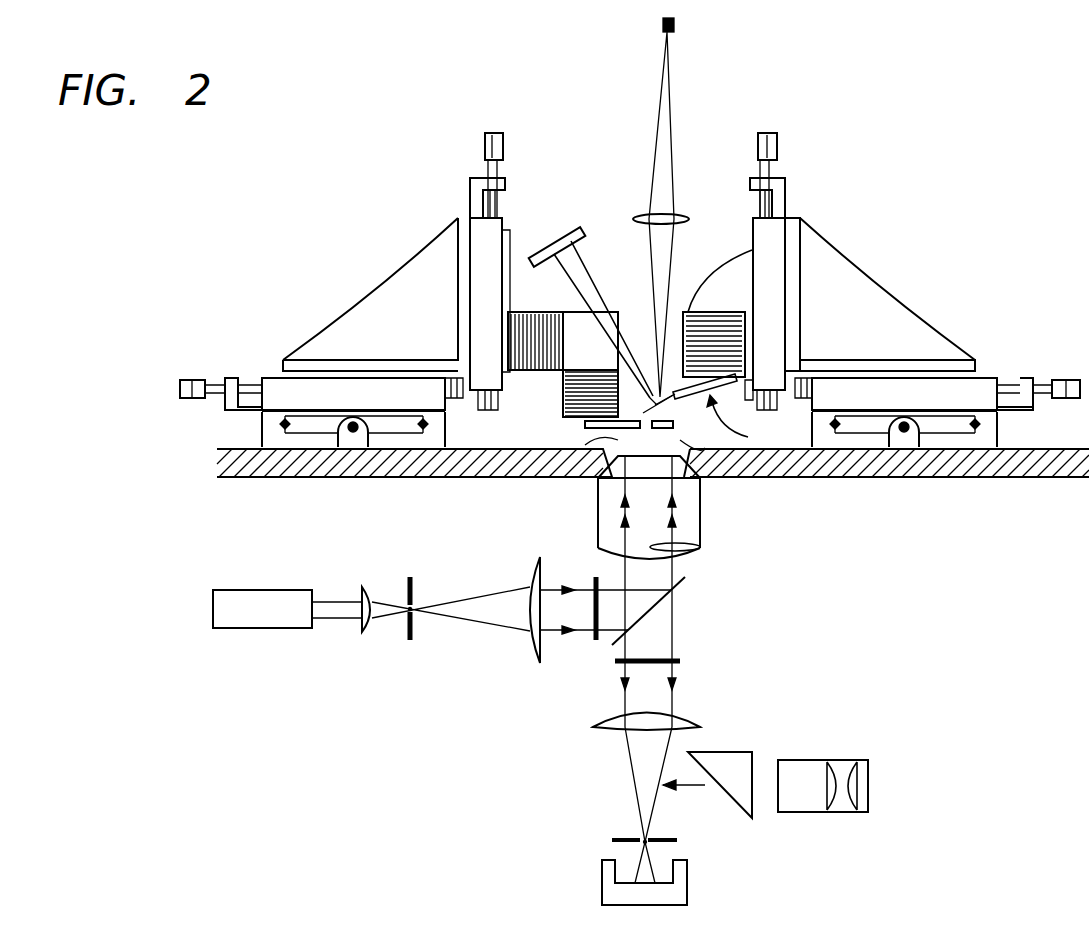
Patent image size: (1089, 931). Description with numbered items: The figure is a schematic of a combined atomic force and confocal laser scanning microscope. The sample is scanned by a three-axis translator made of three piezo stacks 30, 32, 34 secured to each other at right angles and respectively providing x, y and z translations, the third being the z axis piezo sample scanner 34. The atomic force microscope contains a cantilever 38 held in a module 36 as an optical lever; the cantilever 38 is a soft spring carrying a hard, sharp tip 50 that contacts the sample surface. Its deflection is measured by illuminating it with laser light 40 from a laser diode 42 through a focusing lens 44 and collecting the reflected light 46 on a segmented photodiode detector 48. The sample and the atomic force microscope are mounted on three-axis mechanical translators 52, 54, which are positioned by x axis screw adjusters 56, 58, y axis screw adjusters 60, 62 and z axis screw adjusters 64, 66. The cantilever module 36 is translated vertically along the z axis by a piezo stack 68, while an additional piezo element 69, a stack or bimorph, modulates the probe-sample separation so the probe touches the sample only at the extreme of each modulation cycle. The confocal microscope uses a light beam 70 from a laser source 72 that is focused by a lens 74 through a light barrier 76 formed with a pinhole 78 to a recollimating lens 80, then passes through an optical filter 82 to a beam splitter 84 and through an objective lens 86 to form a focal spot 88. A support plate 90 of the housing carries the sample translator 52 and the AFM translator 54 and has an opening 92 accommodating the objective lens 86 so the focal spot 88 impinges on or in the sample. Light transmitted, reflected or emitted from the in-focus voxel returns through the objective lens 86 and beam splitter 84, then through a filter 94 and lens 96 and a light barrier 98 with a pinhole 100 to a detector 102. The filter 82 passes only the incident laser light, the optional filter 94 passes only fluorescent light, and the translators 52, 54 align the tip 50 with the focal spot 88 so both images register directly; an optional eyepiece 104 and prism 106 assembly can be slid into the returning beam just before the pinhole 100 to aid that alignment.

The piezo stack 30 is at (520, 314).
The piezo stack 32 is at (590, 328).
The piezo stack 34 is at (563, 386).
The module 36 is at (700, 400).
The cantilever 38 is at (668, 404).
The laser light 40 is at (657, 140).
The laser diode 42 is at (675, 27).
The focusing lens 44 is at (682, 215).
The reflected light 46 is at (623, 333).
The segmented photodiode detector 48 is at (548, 250).
The tip 50 is at (585, 424).
The three-axis mechanical translator 52 is at (378, 317).
The three-axis mechanical translator 54 is at (902, 330).
The x axis screw adjuster 56 is at (192, 384).
The x axis screw adjuster 58 is at (1065, 384).
The y axis screw adjuster 60 is at (350, 433).
The y axis screw adjuster 62 is at (904, 435).
The z axis screw adjuster 64 is at (486, 142).
The z axis screw adjuster 66 is at (778, 145).
The piezo stack 68 is at (687, 330).
The piezo element 69 is at (735, 392).
The light beam 70 is at (325, 600).
The laser source 72 is at (236, 590).
The lens 74 is at (365, 592).
The light barrier 76 is at (413, 590).
The pinhole 78 is at (408, 612).
The recollimating lens 80 is at (530, 648).
The optical filter 82 is at (595, 637).
The beam splitter 84 is at (685, 580).
The objective lens 86 is at (598, 550).
The focal spot 88 is at (610, 440).
The support plate 90 is at (1045, 455).
The opening 92 is at (672, 446).
The filter 94 is at (680, 665).
The lens 96 is at (700, 724).
The light barrier 98 is at (678, 838).
The pinhole 100 is at (640, 840).
The detector 102 is at (688, 895).
The eyepiece 104 is at (868, 785).
The prism 106 is at (745, 760).